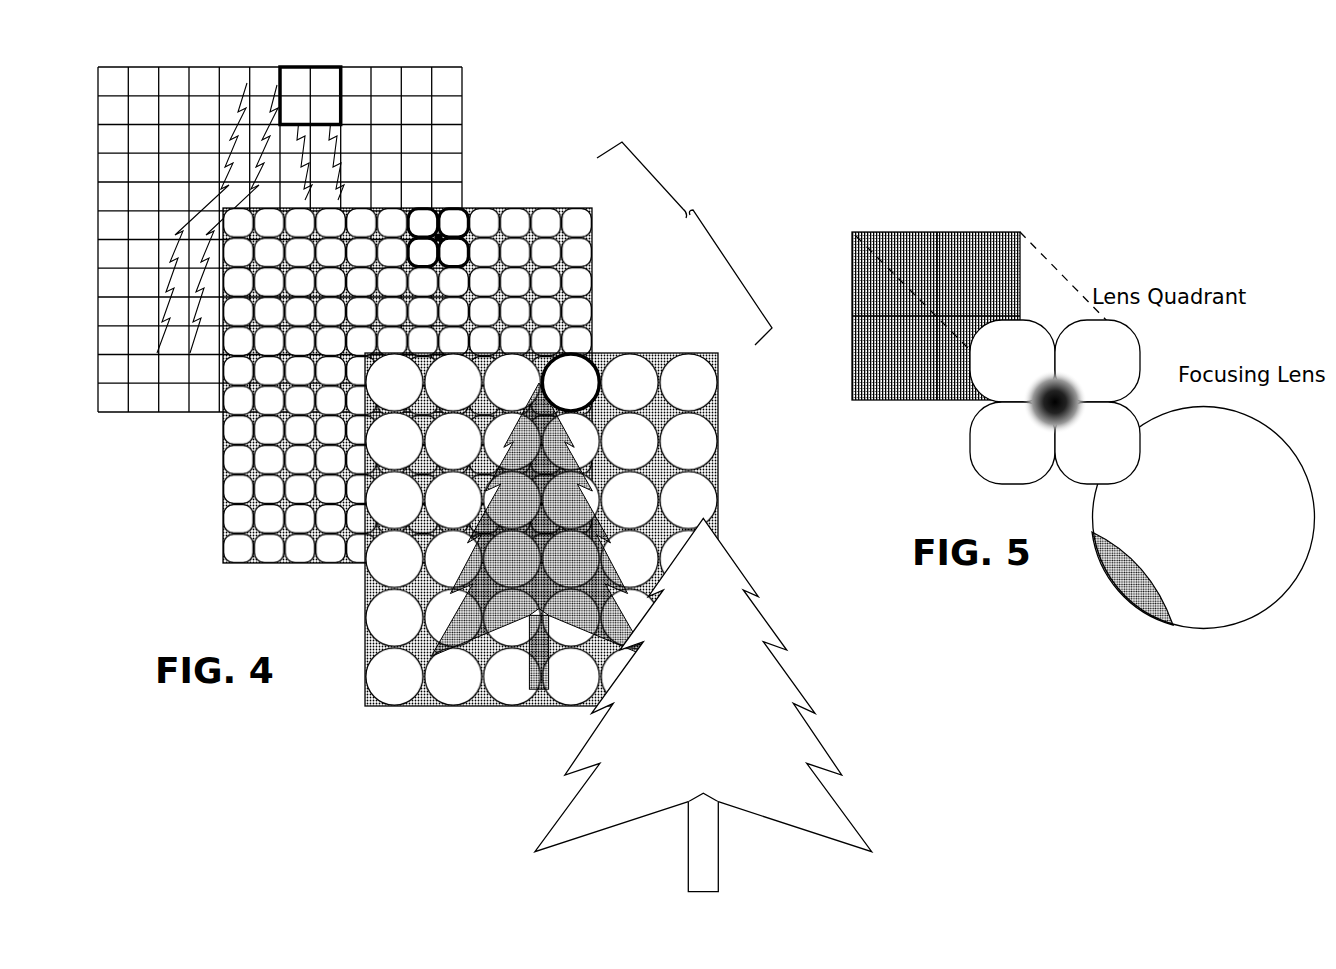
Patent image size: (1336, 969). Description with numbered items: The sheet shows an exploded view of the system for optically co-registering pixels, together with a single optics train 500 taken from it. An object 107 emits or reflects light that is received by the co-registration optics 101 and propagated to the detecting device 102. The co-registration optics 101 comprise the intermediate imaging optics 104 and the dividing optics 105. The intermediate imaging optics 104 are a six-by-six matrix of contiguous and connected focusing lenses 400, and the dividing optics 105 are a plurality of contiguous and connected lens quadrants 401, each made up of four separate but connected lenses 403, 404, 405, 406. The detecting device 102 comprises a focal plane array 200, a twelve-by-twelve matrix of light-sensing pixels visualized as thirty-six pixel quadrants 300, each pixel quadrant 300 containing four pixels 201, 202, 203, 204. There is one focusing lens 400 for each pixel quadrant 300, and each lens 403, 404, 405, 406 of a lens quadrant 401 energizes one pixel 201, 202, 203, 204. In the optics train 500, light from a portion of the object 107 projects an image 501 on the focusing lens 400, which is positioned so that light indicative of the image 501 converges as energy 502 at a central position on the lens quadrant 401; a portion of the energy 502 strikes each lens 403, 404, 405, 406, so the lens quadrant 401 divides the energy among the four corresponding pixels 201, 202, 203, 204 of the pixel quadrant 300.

In FIG. 4, the co-registration optics 101 is at (696, 194).
In FIG. 4, the detecting device 102 is at (525, 37).
In FIG. 4, the intermediate imaging optics 104 is at (630, 352).
In FIG. 4, the dividing optics 105 is at (573, 208).
In FIG. 4, the object 107 is at (651, 637).
In FIG. 4, the focal plane array 200 is at (418, 67).
In FIG. 4, the light-sensing pixel 201 is at (295, 81).
In FIG. 5, the light-sensing pixel 201 is at (940, 316).
In FIG. 4, the light-sensing pixel 202 is at (325, 81).
In FIG. 4, the light-sensing pixel 203 is at (295, 109).
In FIG. 4, the light-sensing pixel 204 is at (325, 109).
In FIG. 4, the pixel quadrant 300 is at (300, 66).
In FIG. 5, the pixel quadrant 300 is at (963, 232).
In FIG. 4, the focusing lens 400 is at (570, 382).
In FIG. 5, the focusing lens 400 is at (1205, 407).
In FIG. 4, the lens quadrant 401 is at (468, 209).
In FIG. 5, the lens quadrant 401 is at (1120, 333).
In FIG. 4, the lens 403 is at (423, 225).
In FIG. 5, the lens 403 is at (1032, 351).
In FIG. 4, the lens 404 is at (453, 225).
In FIG. 5, the lens 404 is at (1076, 351).
In FIG. 4, the lens 405 is at (423, 254).
In FIG. 5, the lens 405 is at (1032, 447).
In FIG. 4, the lens 406 is at (453, 254).
In FIG. 5, the lens 406 is at (1086, 447).
In FIG. 5, the optics train 500 is at (1093, 203).
In FIG. 5, the image 501 is at (1120, 566).
In FIG. 5, the energy 502 is at (1078, 392).